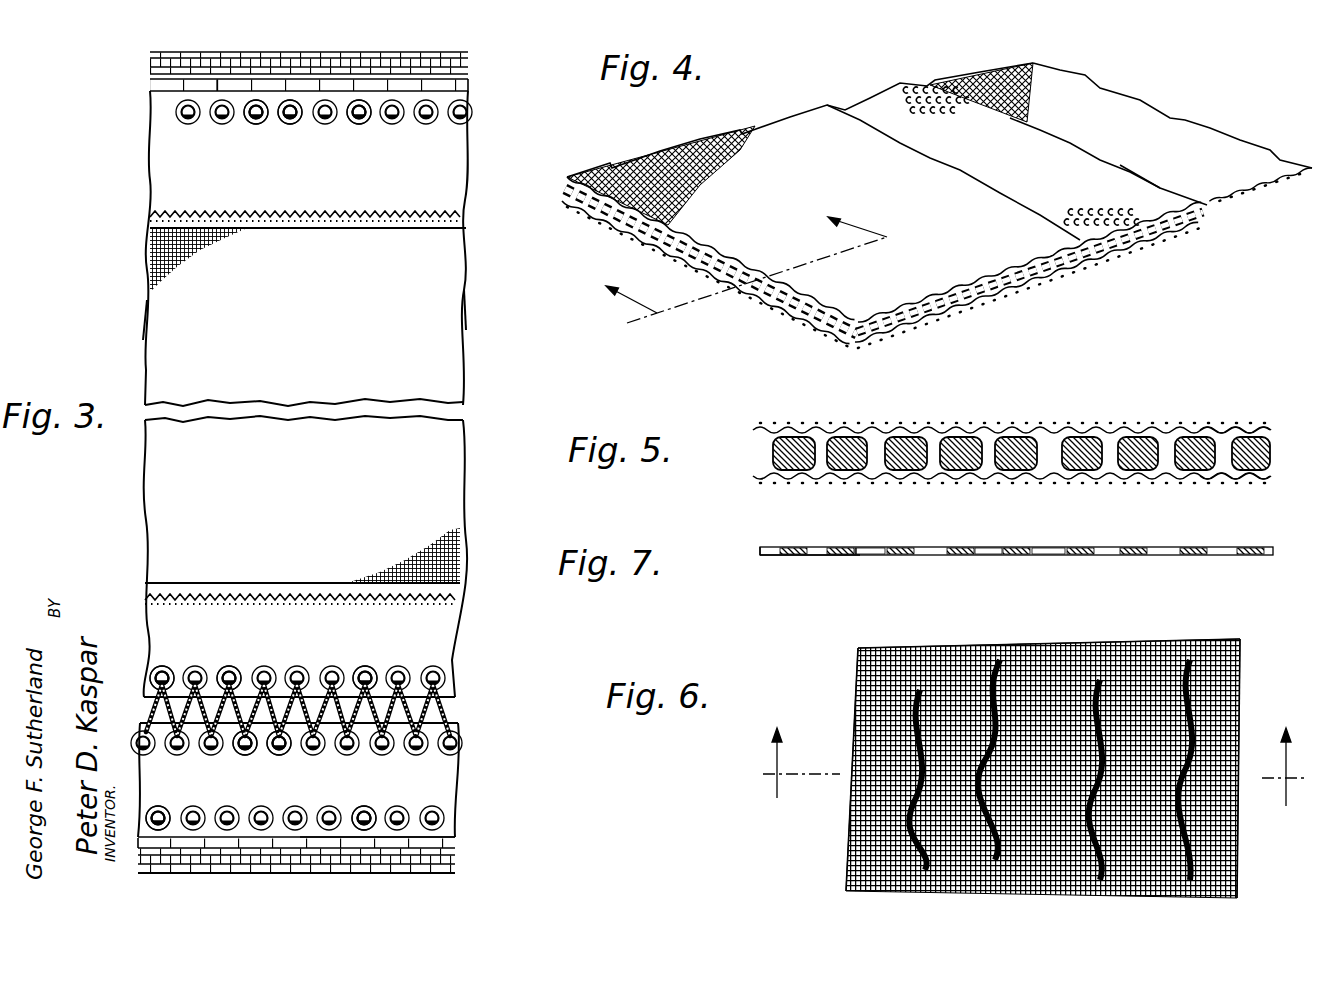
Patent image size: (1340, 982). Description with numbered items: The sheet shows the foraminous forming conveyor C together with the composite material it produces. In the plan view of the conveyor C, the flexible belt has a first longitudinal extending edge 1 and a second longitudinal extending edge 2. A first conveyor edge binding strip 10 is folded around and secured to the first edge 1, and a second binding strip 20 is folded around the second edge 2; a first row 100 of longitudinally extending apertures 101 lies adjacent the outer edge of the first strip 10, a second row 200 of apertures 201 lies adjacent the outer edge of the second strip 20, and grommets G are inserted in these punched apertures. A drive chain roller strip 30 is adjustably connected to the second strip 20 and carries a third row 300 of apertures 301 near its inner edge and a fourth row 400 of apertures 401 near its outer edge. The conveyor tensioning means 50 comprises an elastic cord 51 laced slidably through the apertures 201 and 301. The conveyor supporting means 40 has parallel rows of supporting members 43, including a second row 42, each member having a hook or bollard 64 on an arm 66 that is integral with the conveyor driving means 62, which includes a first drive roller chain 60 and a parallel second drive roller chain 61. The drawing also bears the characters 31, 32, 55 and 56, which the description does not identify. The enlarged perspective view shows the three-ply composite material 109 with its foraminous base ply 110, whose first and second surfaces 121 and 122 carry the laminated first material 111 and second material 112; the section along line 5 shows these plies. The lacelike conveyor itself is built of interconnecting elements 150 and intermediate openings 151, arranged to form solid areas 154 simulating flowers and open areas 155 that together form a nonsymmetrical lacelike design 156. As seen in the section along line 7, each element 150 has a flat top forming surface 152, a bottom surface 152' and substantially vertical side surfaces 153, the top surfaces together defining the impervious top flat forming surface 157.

In FIG. 3, the first longitudinal extending edge 1 is at (337, 230).
In FIG. 3, the second longitudinal extending edge 2 is at (192, 578).
In FIG. 3, the first conveyor edge binding strip 10 is at (162, 195).
In FIG. 3, the second conveyor edge binding strip 20 is at (447, 620).
In FIG. 3, the drive chain roller strip 30 is at (462, 775).
In FIG. 3, the upper edge of section 30 31 is at (470, 726).
In FIG. 3, the lower edge of section 30 32 is at (455, 838).
In FIG. 3, the conveyor supporting means 40 is at (148, 84).
In FIG. 3, the second row of supporting members 42 is at (468, 845).
In FIG. 3, the supporting members 43 is at (470, 86).
In FIG. 3, the conveyor tensioning means 50 is at (468, 712).
In FIG. 3, the elastic cord 51 is at (150, 712).
In FIG. 3, the eyelet 55 is at (185, 648).
In FIG. 3, the eyelet 56 is at (245, 754).
In FIG. 3, the first drive roller chain 60 is at (292, 464).
In FIG. 3, the second drive roller chain 61 is at (350, 871).
In FIG. 3, the conveyor driving means 62 is at (148, 53).
In FIG. 3, the hook or bollard 64 is at (256, 124).
In FIG. 3, the arm 66 is at (215, 92).
In FIG. 3, the first row of apertures 100 is at (175, 112).
In FIG. 3, the apertures 101 is at (290, 124).
In FIG. 4, the three-ply composite material 109 is at (641, 236).
In FIG. 5, the three-ply composite material 109 is at (1032, 431).
In FIG. 4, the foraminous base ply 110 is at (1123, 170).
In FIG. 5, the foraminous base ply 110 is at (1273, 457).
In FIG. 4, the first material 111 is at (650, 150).
In FIG. 5, the first material 111 is at (1250, 400).
In FIG. 4, the second material 112 is at (1240, 146).
In FIG. 5, the second material 112 is at (1257, 487).
In FIG. 4, the first surface 121 is at (1050, 134).
In FIG. 5, the first surface 121 is at (973, 430).
In FIG. 5, the second surface 122 is at (963, 483).
In FIG. 7, the interconnecting element 150 is at (1130, 545).
In FIG. 6, the interconnecting element 150 is at (1118, 615).
In FIG. 7, the intermediate openings 151 is at (813, 555).
In FIG. 3, the top forming surface 152 is at (118, 324).
In FIG. 7, the top forming surface 152 is at (960, 531).
In FIG. 7, the bottom surface 152' is at (1037, 566).
In FIG. 7, the side surfaces 153 is at (878, 533).
In FIG. 6, the solid areas 154 is at (1022, 613).
In FIG. 6, the open areas 155 is at (874, 713).
In FIG. 6, the lacelike design 156 is at (1247, 848).
In FIG. 3, the impervious top flat forming surface 157 is at (425, 312).
In FIG. 7, the impervious top flat forming surface 157 is at (793, 545).
In FIG. 3, the second row of apertures 200 is at (450, 680).
In FIG. 3, the apertures 201 is at (372, 652).
In FIG. 3, the third row of apertures 300 is at (462, 745).
In FIG. 3, the apertures 301 is at (280, 755).
In FIG. 3, the fourth row of apertures 400 is at (455, 822).
In FIG. 3, the apertures 401 is at (366, 800).
In FIG. 3, the grommets G is at (360, 124).
In FIG. 3, the foraminous conveyor C is at (467, 433).
In FIG. 7, the foraminous conveyor C is at (800, 559).
In FIG. 6, the foraminous conveyor C is at (1230, 636).
In FIG. 4, the section line 5— 5 is at (764, 281).
In FIG. 6, the section line 7— 7 is at (1028, 777).